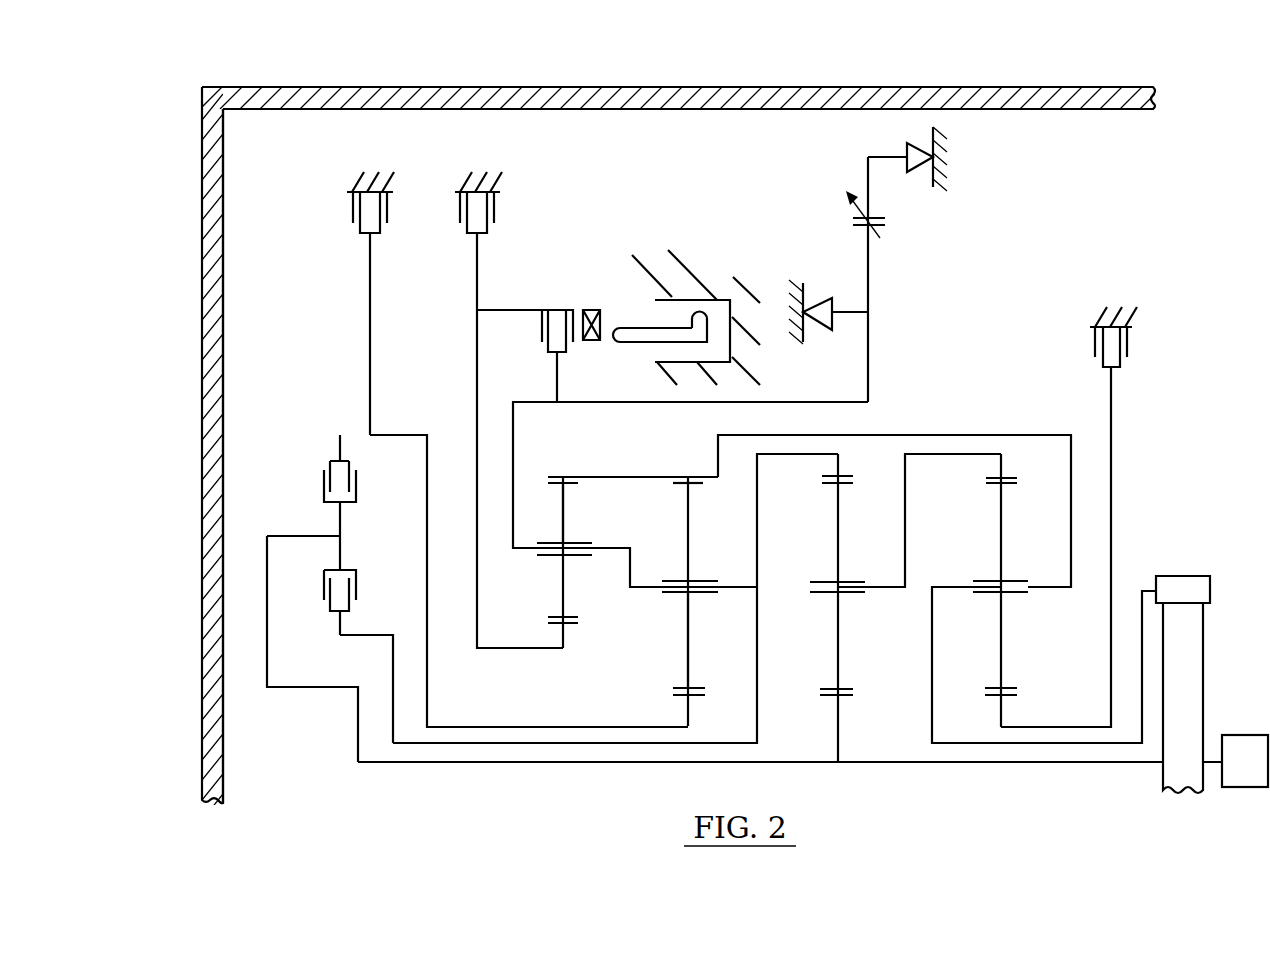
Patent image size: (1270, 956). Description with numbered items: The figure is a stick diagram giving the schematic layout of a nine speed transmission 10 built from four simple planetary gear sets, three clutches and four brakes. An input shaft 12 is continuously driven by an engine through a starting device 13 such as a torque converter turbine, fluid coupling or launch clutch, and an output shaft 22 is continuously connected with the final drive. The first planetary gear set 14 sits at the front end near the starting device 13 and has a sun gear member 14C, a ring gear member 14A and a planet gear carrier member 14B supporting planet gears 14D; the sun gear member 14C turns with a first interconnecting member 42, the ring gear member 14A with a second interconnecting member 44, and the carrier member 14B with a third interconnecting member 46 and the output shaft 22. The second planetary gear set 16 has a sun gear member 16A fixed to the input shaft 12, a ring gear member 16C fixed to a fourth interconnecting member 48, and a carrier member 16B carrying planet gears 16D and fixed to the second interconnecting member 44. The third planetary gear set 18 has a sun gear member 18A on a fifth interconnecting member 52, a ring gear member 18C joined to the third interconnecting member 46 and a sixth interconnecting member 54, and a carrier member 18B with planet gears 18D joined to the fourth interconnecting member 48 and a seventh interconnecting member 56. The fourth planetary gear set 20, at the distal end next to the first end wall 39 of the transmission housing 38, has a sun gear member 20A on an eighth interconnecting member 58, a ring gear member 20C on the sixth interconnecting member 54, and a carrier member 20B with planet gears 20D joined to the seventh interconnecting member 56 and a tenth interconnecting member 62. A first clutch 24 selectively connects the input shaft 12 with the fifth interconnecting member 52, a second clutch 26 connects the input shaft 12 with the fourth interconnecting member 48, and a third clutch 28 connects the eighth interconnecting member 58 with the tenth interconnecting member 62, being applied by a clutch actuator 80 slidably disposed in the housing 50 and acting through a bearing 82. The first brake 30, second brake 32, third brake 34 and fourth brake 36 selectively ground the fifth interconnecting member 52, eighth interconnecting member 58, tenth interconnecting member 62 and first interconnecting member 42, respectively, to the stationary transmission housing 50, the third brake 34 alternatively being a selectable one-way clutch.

The nine speed transmission 10 is at (1160, 178).
The input shaft 12 is at (1052, 764).
The starting device 13 is at (1232, 775).
The first planetary gear set 14 is at (1044, 631).
The ring gear member 14A is at (1010, 485).
The planet gear carrier member 14B is at (1040, 593).
The sun gear member 14C is at (987, 710).
The planet gears 14D is at (1001, 550).
The second planetary gear set 16 is at (839, 631).
The sun gear member 16A is at (848, 704).
The planet gear carrier member 16B is at (866, 593).
The ring gear member 16C is at (846, 485).
The planet gears 16D is at (838, 552).
The third planetary gear set 18 is at (695, 642).
The sun gear member 18A is at (665, 698).
The planet gear carrier member 18B is at (720, 593).
The ring gear member 18C is at (700, 485).
The planet gears 18D is at (688, 520).
The fourth planetary gear set 20 is at (625, 623).
The sun gear member 20A is at (570, 624).
The planet gear carrier member 20B is at (598, 553).
The ring gear member 20C is at (558, 477).
The planet gears 20D is at (565, 510).
The output shaft 22 is at (1140, 606).
The first clutch 24 is at (350, 502).
The second clutch 26 is at (353, 571).
The third clutch 28 is at (542, 333).
The first brake 30 is at (385, 216).
The second brake 32 is at (456, 213).
The third brake 34 is at (912, 217).
The fourth brake 36 is at (1130, 341).
The transmission housing 38 is at (706, 110).
The first end wall 39 is at (202, 447).
The first interconnecting member 42 is at (1112, 412).
The second interconnecting member 44 is at (940, 454).
The third interconnecting member 46 is at (880, 435).
The fourth interconnecting member 48 is at (757, 620).
The transmission housing 50 is at (470, 181).
The fifth interconnecting member 52 is at (478, 728).
The sixth interconnecting member 54 is at (690, 477).
The seventh interconnecting member 56 is at (632, 568).
The eighth interconnecting member 58 is at (478, 602).
The tenth interconnecting member 62 is at (513, 435).
The clutch actuator 80 is at (637, 342).
The bearing 82 is at (591, 310).